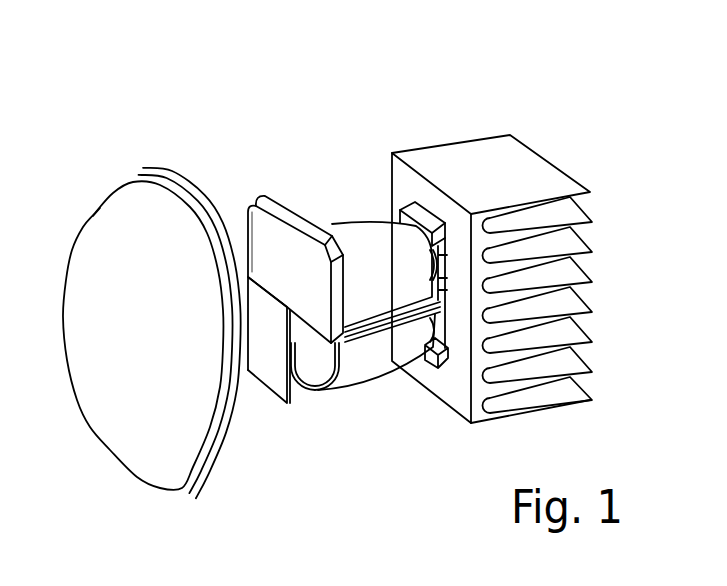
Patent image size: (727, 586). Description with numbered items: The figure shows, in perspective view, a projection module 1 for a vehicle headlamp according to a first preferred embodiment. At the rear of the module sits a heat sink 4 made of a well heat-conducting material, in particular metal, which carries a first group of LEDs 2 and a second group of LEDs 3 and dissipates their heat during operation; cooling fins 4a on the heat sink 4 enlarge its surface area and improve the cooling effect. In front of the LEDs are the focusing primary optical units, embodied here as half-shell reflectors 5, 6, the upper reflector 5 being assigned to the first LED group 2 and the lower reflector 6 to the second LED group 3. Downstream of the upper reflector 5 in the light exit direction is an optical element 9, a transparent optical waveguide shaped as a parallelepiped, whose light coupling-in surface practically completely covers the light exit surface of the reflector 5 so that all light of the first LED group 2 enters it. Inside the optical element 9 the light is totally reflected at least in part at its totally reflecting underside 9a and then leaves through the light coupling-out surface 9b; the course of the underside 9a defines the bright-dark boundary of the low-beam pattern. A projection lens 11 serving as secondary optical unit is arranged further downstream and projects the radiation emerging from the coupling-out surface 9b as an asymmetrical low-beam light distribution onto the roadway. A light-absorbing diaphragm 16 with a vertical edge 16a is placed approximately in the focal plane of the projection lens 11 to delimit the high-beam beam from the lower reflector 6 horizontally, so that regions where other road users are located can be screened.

The projection module 1 is at (371, 108).
The first group of LEDs 2 is at (420, 252).
The second group of LEDs 3 is at (411, 320).
The heat sink 4 is at (518, 168).
The cooling fins 4a is at (568, 303).
The reflector 5 is at (356, 240).
The reflector 6 is at (358, 367).
The optical element 9 is at (288, 210).
The totally reflecting underside 9a is at (308, 360).
The light coupling-out surface 9b is at (251, 233).
The projection lens 11 is at (125, 445).
The light-absorbing diaphragm 16 is at (267, 383).
The vertical edge 16a is at (297, 420).